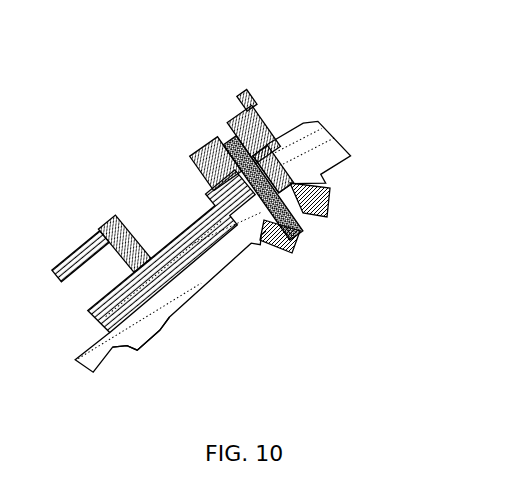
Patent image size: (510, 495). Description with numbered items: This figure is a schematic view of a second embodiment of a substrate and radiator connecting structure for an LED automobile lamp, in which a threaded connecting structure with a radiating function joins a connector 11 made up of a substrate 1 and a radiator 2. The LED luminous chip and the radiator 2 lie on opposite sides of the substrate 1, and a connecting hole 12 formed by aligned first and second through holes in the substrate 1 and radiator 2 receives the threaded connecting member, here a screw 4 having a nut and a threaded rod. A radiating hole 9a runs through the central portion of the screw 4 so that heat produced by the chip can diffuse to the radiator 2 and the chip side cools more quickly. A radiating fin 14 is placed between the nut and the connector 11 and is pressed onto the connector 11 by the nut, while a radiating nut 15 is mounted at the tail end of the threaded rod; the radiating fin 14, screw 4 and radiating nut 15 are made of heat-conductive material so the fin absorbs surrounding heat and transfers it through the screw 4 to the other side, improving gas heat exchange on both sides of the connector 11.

The substrate 1 is at (180, 222).
The radiator 2 is at (205, 270).
The screw 4 is at (203, 150).
The radiating hole 9a is at (230, 147).
The connector 11 is at (177, 317).
The connecting hole 12 is at (338, 141).
The radiating fin 14 is at (258, 113).
The radiating nut 15 is at (332, 201).